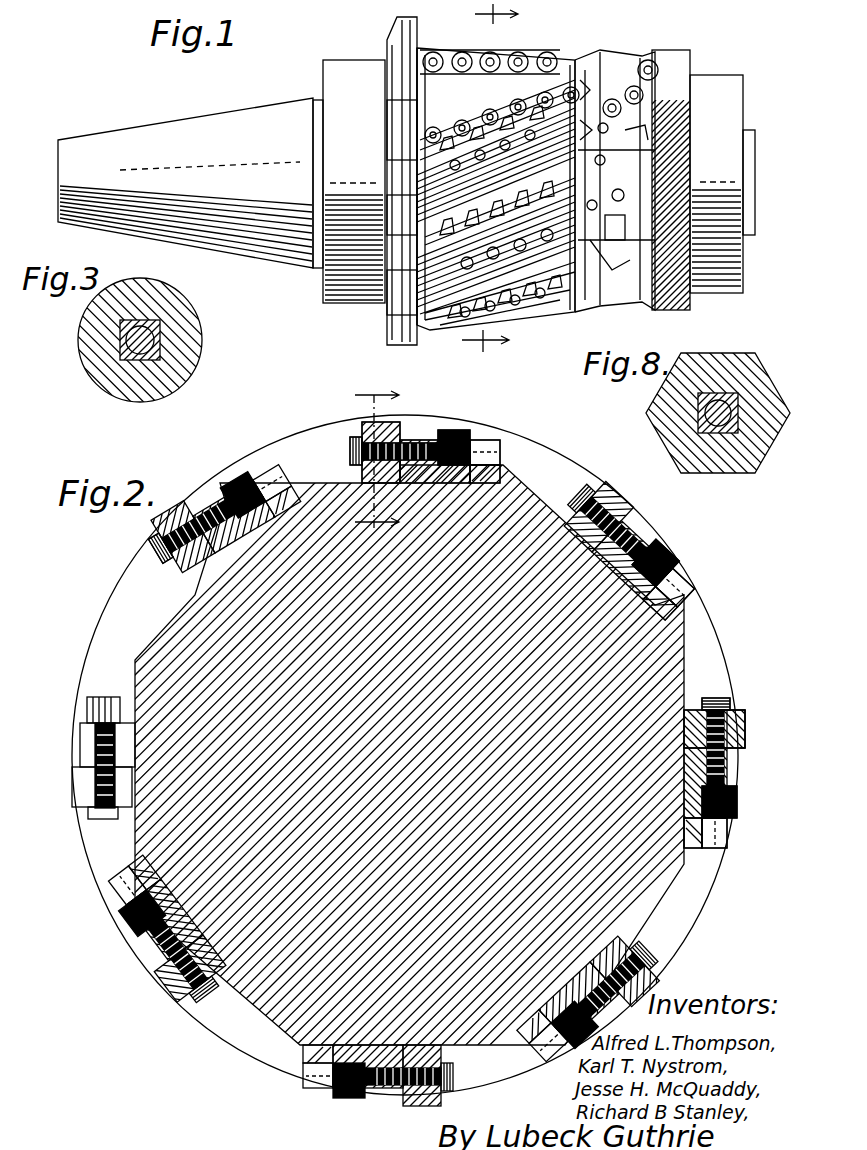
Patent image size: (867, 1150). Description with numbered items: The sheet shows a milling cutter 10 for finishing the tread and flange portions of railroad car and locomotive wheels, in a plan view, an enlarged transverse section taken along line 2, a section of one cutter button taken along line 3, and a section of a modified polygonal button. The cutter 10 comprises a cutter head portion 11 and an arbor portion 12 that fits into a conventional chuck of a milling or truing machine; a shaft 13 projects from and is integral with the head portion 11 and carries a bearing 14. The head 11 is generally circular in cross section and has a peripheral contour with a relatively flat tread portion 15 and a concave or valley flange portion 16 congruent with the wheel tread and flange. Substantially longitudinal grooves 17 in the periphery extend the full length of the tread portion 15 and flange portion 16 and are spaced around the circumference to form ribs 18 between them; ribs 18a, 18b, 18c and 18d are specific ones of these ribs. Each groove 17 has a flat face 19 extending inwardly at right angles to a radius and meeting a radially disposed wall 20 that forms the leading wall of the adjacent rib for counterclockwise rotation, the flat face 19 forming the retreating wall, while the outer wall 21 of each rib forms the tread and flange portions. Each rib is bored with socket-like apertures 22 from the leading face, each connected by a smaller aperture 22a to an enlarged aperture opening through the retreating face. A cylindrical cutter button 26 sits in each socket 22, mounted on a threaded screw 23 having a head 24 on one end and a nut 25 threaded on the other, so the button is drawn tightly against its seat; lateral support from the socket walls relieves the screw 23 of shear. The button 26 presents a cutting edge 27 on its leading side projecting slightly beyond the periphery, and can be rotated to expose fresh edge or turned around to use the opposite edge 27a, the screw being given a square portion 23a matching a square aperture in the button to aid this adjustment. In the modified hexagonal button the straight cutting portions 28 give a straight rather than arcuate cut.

In FIG. 1, the section line 2— 2 is at (490, 190).
In FIG. 2, the section line 3— 3 is at (377, 460).
In FIG. 1, the cutter 10 is at (353, 60).
In FIG. 1, the cutter head portion 11 is at (568, 48).
In FIG. 1, the arbor portion 12 is at (214, 130).
In FIG. 1, the shaft 13 is at (758, 138).
In FIG. 1, the bearing 14 is at (718, 80).
In FIG. 1, the flat tread portion 15 is at (546, 52).
In FIG. 1, the concave flange portion 16 is at (605, 86).
In FIG. 2, the longitudinal grooves 17 is at (306, 458).
In FIG. 1, the ribs 18 is at (450, 45).
In FIG. 2, the ribs 18 is at (442, 456).
In FIG. 2, the rib 18a is at (381, 1093).
In FIG. 2, the rib 18b is at (77, 750).
In FIG. 2, the rib 18c is at (408, 418).
In FIG. 2, the rib 18d is at (736, 830).
In FIG. 1, the flat face 19 is at (540, 205).
In FIG. 2, the flat face 19 is at (286, 468).
In FIG. 1, the radially disposed wall 20 is at (480, 225).
In FIG. 2, the outer wall 21 is at (591, 488).
In FIG. 1, the socket-like apertures 22 is at (501, 212).
In FIG. 2, the socket-like apertures 22 is at (383, 437).
In FIG. 2, the aperture 22a is at (443, 437).
In FIG. 3, the threaded screw 23 is at (120, 332).
In FIG. 2, the threaded screw 23 is at (452, 446).
In FIG. 3, the square portion of screw 23a is at (140, 345).
In FIG. 2, the square portion of screw 23a is at (405, 483).
In FIG. 1, the screw head 24 is at (500, 53).
In FIG. 2, the screw head 24 is at (353, 445).
In FIG. 2, the nut 25 is at (471, 460).
In FIG. 1, the cutter button 26 is at (410, 50).
In FIG. 3, the cutter button 26 is at (140, 340).
In FIG. 2, the cutter button 26 is at (396, 428).
In FIG. 2, the cutting edge 27 is at (146, 552).
In FIG. 2, the opposite cutting edge 27a is at (166, 525).
In FIG. 8, the straight cutting edge 28 is at (730, 352).